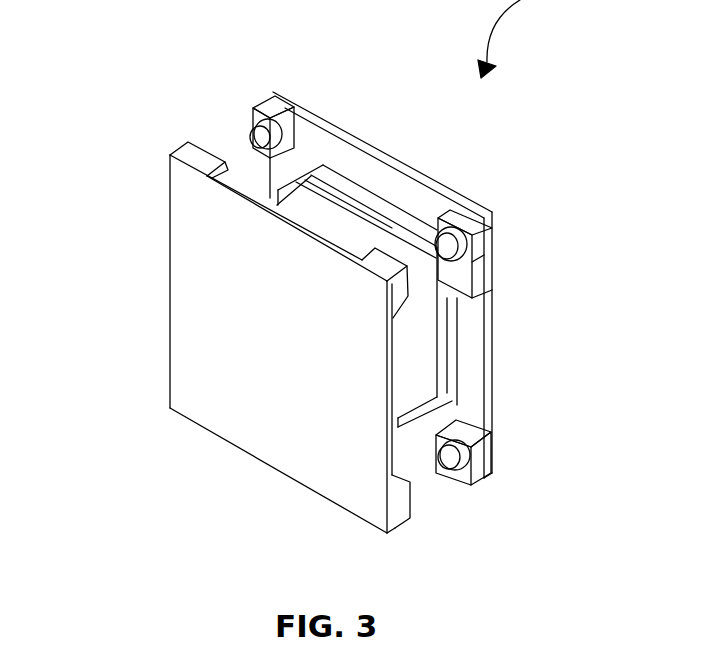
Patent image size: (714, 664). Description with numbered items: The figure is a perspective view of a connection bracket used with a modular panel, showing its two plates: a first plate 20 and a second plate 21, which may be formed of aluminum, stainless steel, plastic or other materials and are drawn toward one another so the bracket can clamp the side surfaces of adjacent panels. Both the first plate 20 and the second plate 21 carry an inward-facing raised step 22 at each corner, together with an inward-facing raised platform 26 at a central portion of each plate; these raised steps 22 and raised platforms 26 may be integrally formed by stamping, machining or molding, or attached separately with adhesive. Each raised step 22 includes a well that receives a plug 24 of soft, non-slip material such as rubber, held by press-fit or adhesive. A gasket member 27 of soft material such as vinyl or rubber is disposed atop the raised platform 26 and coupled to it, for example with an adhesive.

The first plate 20 is at (272, 250).
The second plate 21 is at (336, 118).
The raised step 22 is at (213, 165).
The plug 24 is at (264, 142).
The raised platform 26 is at (390, 208).
The gasket member 27 is at (358, 218).